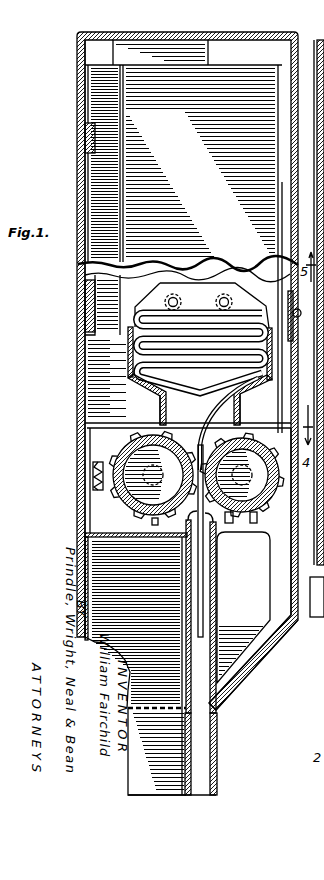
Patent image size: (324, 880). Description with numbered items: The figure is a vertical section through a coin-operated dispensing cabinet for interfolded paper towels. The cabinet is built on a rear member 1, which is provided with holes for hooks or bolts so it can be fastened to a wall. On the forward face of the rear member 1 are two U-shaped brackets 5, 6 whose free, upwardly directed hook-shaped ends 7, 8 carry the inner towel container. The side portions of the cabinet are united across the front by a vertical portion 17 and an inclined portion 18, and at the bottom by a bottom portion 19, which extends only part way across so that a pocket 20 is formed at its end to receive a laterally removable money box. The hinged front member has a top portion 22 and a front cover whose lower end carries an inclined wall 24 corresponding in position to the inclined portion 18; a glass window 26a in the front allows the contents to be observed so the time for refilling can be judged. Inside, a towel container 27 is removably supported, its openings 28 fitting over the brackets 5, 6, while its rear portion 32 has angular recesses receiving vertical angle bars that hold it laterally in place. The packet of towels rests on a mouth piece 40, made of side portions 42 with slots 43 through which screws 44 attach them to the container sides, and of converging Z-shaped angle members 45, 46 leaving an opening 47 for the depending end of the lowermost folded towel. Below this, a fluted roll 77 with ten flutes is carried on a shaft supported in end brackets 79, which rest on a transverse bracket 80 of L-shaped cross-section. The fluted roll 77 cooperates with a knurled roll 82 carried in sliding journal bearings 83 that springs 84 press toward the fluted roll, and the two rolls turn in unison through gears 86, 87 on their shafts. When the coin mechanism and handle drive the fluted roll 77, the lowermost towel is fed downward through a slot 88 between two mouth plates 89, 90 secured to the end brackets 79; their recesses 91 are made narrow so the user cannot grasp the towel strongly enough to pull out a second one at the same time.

The rear member 1 is at (78, 50).
The U-shaped bracket 5 is at (82, 103).
The U-shaped bracket 6 is at (82, 292).
The hook-shaped end 7 is at (85, 139).
The hook-shaped end 8 is at (84, 333).
The vertical portion 17 is at (290, 591).
The inclined portion 18 is at (270, 646).
The bottom portion 19 is at (166, 711).
The pocket 20 is at (153, 791).
The top portion 22 is at (266, 32).
The inclined wall 24 is at (256, 672).
The glass window 26a is at (295, 300).
The towel container 27 is at (260, 118).
The opening 28 is at (88, 170).
The rear portion 32 is at (95, 238).
The mouth piece 40 is at (130, 372).
The side portion 42 is at (197, 292).
The slot 43 is at (232, 282).
The screw 44 is at (175, 292).
The Z-shaped angle member 45 is at (160, 400).
The Z-shaped angle member 46 is at (130, 385).
The opening 47 is at (217, 424).
The fluted roll 77 is at (245, 521).
The end bracket 79 is at (252, 640).
The transverse bracket 80 is at (86, 452).
The knurled roll 82 is at (155, 525).
The sliding journal bearing 83 is at (104, 492).
The spring 84 is at (96, 476).
The gear 86 is at (230, 523).
The gear 87 is at (132, 519).
The slot 88 is at (200, 650).
The mouth plate 89 is at (232, 692).
The mouth plate 90 is at (214, 714).
The recess 91 is at (206, 752).